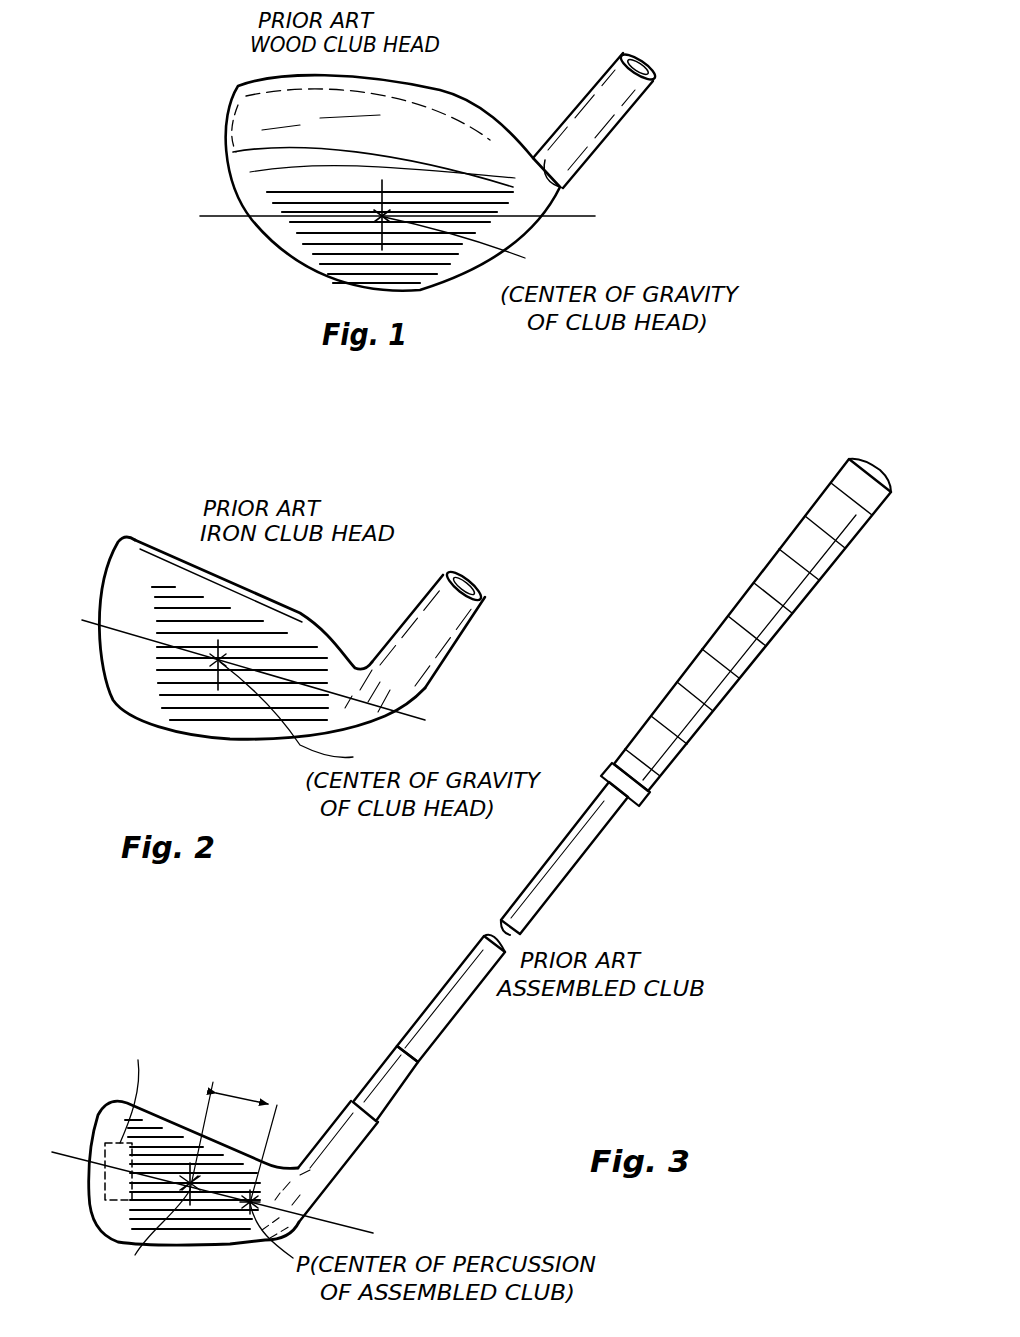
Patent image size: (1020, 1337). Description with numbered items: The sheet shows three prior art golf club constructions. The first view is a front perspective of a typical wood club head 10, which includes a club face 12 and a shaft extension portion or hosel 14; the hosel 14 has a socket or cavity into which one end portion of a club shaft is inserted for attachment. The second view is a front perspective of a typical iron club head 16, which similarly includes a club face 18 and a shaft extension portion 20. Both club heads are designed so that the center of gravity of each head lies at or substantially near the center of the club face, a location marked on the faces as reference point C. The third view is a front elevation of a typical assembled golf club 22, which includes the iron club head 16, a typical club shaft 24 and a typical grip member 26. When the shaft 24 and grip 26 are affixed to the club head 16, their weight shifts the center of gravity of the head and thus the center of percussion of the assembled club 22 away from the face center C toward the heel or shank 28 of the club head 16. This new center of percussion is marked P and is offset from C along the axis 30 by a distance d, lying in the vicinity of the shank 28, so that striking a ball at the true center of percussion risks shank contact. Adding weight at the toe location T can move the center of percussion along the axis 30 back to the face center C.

In FIG. 1, the wood club head 10 is at (496, 118).
In FIG. 1, the club face 12 is at (292, 245).
In FIG. 1, the shaft extension portion or hosel 14 is at (642, 98).
In FIG. 2, the iron club head 16 is at (366, 626).
In FIG. 3, the iron club head 16 is at (88, 1196).
In FIG. 2, the club face 18 is at (125, 662).
In FIG. 3, the club face 18 is at (110, 1212).
In FIG. 2, the shaft extension portion 20 is at (460, 628).
In FIG. 3, the shaft extension portion 20 is at (355, 1150).
In FIG. 3, the assembled golf club 22 is at (628, 680).
In FIG. 3, the club shaft 24 is at (561, 882).
In FIG. 3, the grip member 26 is at (815, 578).
In FIG. 3, the heel or shank 28 is at (303, 1200).
In FIG. 3, the axis 30 is at (65, 1152).